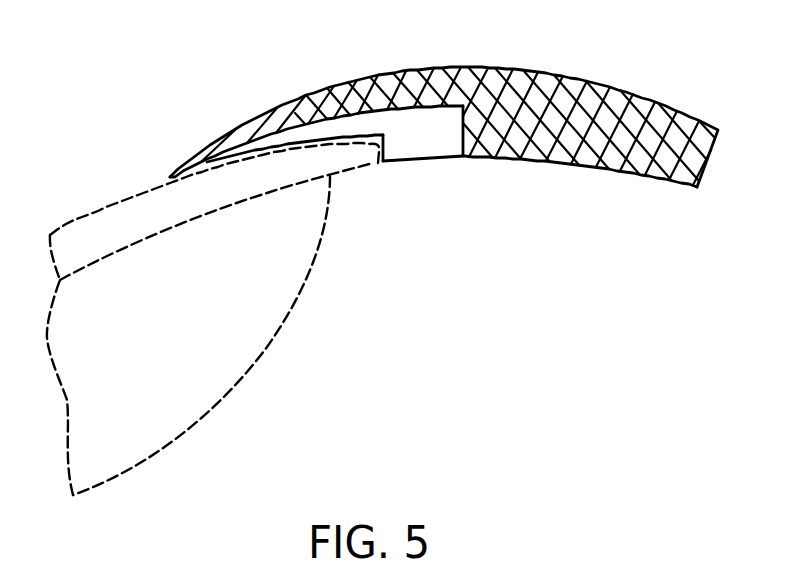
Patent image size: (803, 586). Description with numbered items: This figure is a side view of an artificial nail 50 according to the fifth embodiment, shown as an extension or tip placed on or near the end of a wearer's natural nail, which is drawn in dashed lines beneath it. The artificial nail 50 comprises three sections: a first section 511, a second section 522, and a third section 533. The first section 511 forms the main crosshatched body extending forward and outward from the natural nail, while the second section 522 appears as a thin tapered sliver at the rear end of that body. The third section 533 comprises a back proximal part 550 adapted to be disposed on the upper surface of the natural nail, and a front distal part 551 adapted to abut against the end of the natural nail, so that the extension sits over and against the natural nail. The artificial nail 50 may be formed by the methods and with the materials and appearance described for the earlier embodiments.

The artificial nail 50 is at (126, 104).
The crosshatched visor body 511 is at (700, 118).
The tapered edge portion 522 is at (235, 126).
The third section 533 is at (450, 158).
The back proximal part 550 is at (315, 140).
The front distal part 551 is at (382, 165).